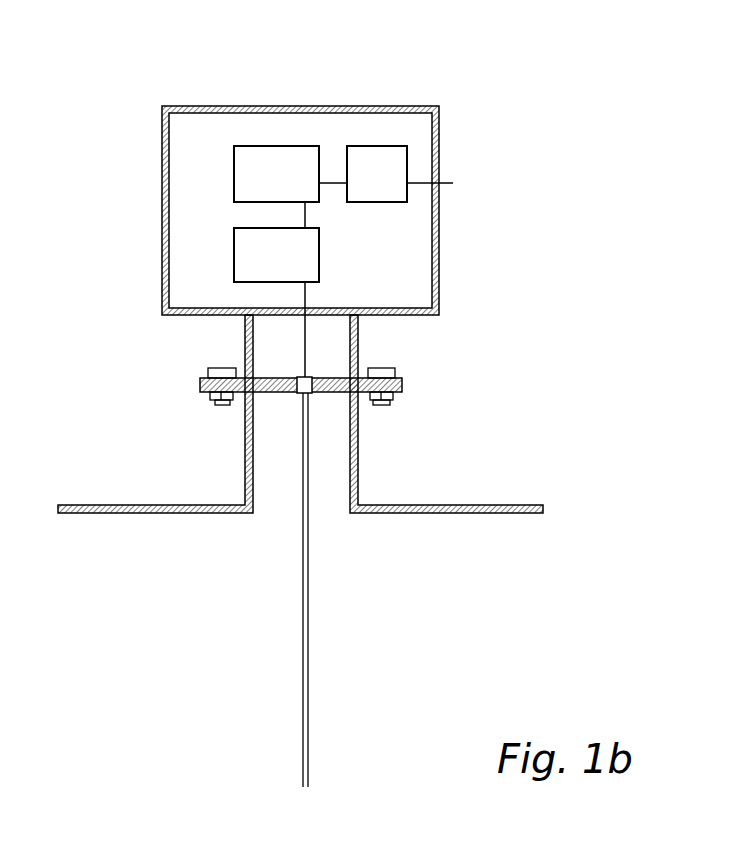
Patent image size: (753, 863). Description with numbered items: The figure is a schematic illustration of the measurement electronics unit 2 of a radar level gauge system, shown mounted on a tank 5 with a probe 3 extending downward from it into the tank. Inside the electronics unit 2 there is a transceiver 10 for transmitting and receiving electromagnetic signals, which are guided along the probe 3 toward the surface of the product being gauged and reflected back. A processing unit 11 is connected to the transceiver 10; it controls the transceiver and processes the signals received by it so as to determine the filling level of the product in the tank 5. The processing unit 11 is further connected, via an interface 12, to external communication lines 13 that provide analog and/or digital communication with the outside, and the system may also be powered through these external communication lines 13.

The measurement electronics unit 2 is at (222, 106).
The probe 3 is at (308, 625).
The tank 5 is at (472, 505).
The transceiver 10 is at (319, 254).
The processing unit 11 is at (234, 178).
The interface 12 is at (380, 146).
The external communication lines 13 is at (447, 183).